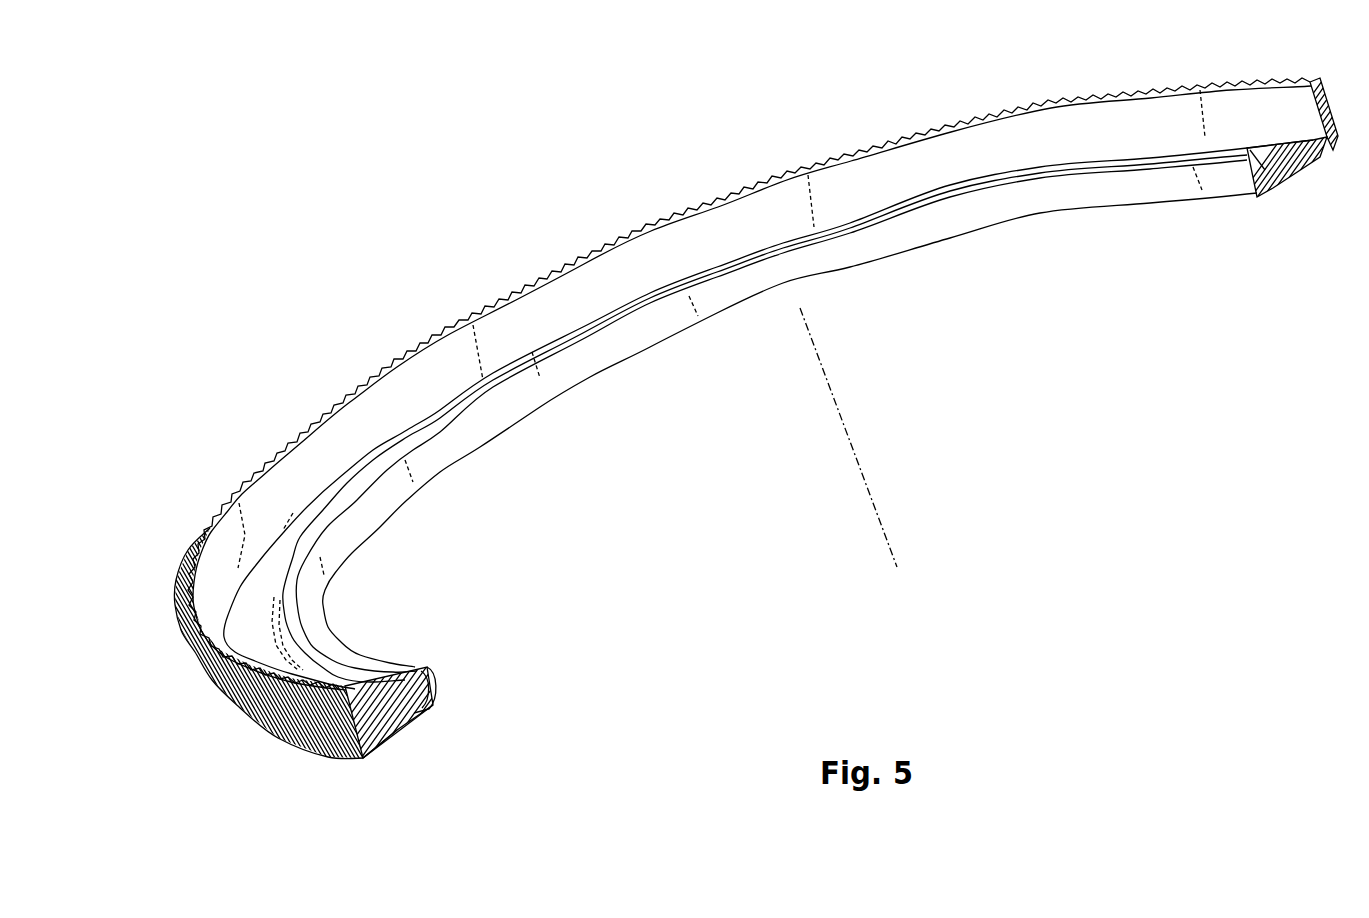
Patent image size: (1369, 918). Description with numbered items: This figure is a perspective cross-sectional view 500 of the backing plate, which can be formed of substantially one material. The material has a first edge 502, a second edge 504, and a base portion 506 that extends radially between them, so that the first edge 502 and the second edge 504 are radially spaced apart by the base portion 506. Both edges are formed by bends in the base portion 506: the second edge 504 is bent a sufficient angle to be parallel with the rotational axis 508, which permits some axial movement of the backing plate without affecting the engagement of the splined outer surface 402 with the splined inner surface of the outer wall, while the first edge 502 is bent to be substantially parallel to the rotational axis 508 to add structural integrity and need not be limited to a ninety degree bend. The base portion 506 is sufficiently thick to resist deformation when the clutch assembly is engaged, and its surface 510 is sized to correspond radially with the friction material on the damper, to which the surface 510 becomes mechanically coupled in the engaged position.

The perspective cross-sectional view 500 is at (977, 516).
The splined outer surface 402 is at (230, 708).
The second edge 504 is at (360, 704).
The first edge 502 is at (428, 676).
The base portion 506 is at (408, 713).
The surface 510 is at (397, 748).
The rotational axis 508 is at (852, 436).